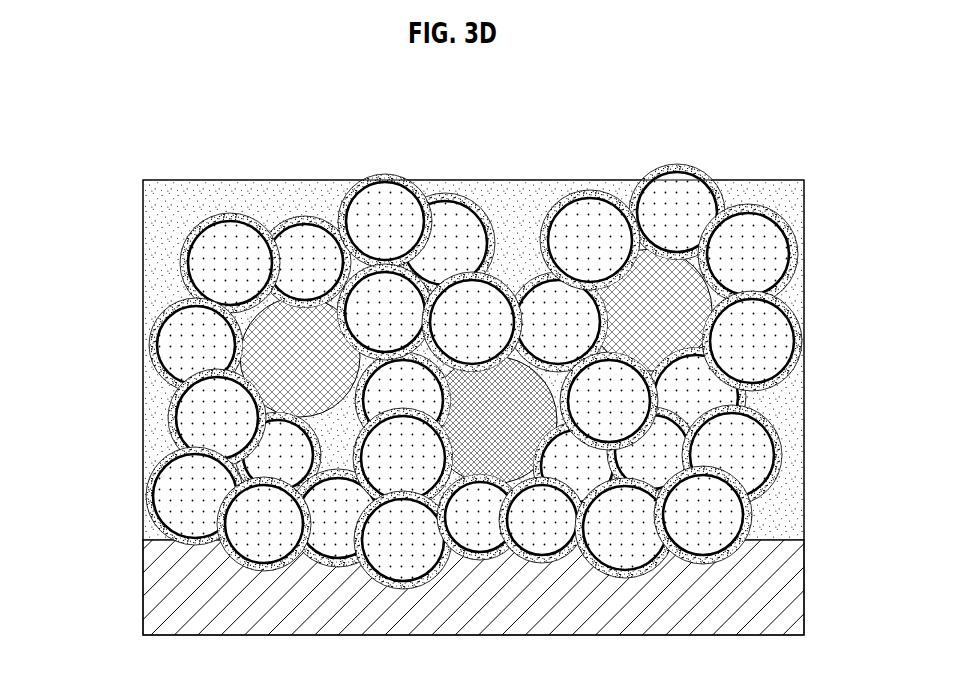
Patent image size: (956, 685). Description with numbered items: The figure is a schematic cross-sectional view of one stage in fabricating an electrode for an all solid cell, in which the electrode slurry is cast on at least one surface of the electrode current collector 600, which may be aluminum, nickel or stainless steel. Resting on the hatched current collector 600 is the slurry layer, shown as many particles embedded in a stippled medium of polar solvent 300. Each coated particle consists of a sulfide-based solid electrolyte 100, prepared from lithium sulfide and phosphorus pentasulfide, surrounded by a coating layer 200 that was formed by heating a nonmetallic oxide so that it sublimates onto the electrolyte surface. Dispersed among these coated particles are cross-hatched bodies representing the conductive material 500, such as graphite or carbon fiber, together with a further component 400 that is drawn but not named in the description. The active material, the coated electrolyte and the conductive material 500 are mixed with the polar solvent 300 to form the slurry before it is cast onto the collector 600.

The sulfide-based solid electrolyte 100 is at (692, 190).
The coating layer 200 is at (675, 166).
The polar solvent 300 is at (162, 205).
The first filler particle 400 is at (277, 357).
The conductive material 500 is at (523, 420).
The electrode current collector 600 is at (161, 588).